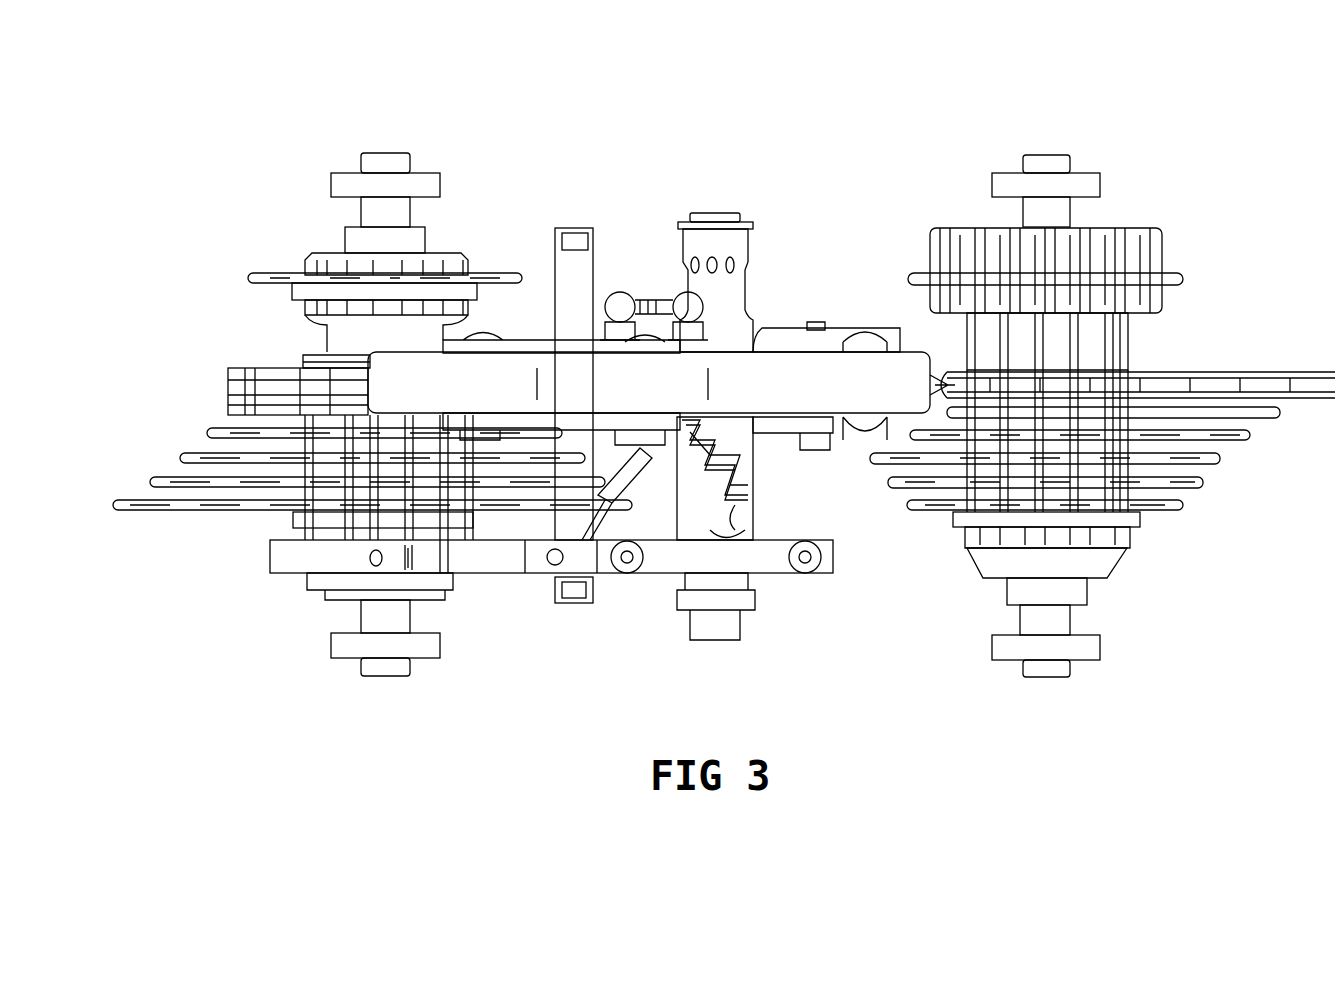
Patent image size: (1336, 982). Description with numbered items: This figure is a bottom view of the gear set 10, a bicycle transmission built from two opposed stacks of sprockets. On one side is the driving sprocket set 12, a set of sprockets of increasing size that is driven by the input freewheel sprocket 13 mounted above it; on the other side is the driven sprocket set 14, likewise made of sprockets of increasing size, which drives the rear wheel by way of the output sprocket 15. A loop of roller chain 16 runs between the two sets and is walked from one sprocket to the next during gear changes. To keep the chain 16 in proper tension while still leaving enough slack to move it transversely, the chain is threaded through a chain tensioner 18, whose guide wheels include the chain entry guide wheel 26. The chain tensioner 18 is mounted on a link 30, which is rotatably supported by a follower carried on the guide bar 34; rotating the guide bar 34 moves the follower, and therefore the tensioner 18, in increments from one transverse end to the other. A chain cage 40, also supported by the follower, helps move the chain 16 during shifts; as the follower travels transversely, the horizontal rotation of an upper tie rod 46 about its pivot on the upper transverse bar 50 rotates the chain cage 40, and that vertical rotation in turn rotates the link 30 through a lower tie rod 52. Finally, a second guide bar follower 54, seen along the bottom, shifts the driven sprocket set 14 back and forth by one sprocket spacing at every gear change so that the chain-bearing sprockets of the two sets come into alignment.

The gear set 10 is at (868, 119).
The driving sprocket set 12 is at (1270, 494).
The input freewheel sprocket 13 is at (1158, 240).
The driven sprocket set 14 is at (150, 421).
The output sprocket 15 is at (268, 277).
The roller chain 16 is at (1278, 370).
The chain tensioner 18 is at (755, 400).
The chain entry guide wheel 26 is at (937, 373).
The link 30 is at (553, 427).
The guide bar 34 is at (749, 518).
The chain cage 40 is at (802, 427).
The upper tie rod 46 is at (620, 491).
The upper transverse bar 50 is at (575, 278).
The lower tie rod 52 is at (619, 302).
The second guide bar follower 54 is at (497, 556).